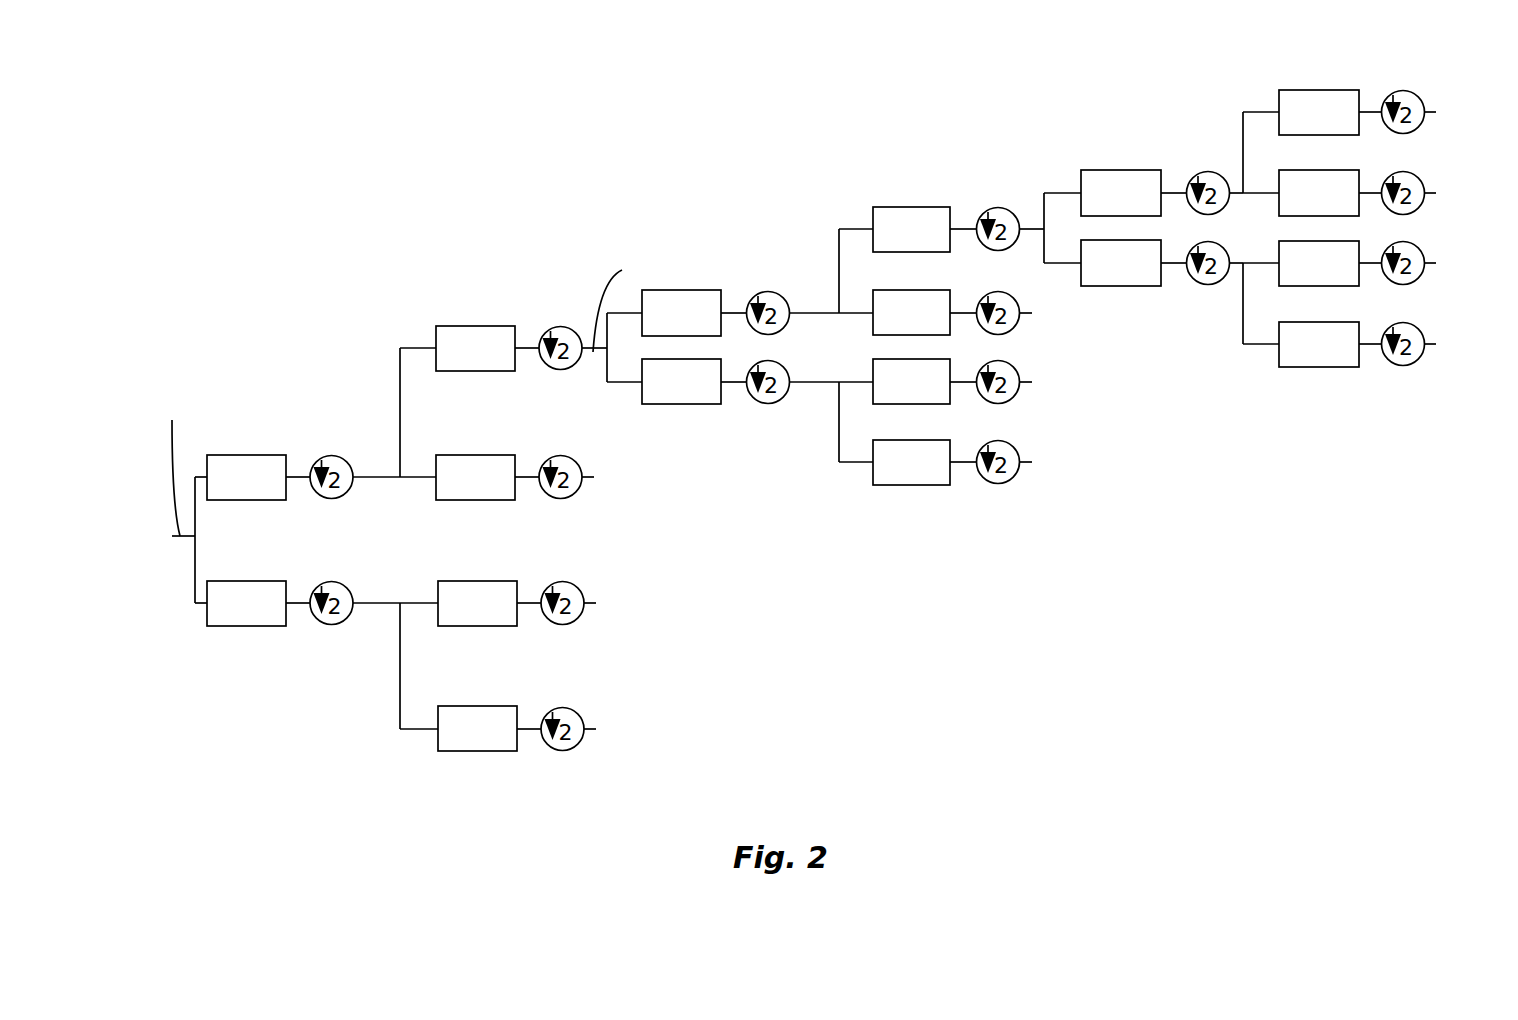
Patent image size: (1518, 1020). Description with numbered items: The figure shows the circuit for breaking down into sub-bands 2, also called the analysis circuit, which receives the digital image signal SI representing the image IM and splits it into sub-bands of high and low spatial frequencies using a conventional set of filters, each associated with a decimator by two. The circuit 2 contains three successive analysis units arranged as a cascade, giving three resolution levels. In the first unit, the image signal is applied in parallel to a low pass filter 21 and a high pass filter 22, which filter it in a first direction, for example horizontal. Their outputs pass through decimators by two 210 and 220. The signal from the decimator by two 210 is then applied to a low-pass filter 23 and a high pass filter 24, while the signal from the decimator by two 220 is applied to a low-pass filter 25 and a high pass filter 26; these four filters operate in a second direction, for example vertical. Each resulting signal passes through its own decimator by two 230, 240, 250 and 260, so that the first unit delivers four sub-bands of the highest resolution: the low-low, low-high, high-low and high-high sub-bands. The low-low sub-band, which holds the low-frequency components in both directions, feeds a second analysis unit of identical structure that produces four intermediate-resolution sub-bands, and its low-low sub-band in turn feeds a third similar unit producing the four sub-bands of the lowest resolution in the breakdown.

The circuit for breaking down into sub-bands 2 is at (820, 420).
The low pass filter 21 is at (250, 455).
The high pass filter 22 is at (250, 581).
The low-pass filter 23 is at (482, 326).
The high pass filter 24 is at (482, 455).
The low-pass filter 25 is at (484, 581).
The high pass filter 26 is at (484, 706).
The decimator by two 210 is at (331, 456).
The decimator by two 220 is at (332, 582).
The decimator by two 230 is at (561, 327).
The decimator by two 240 is at (561, 456).
The decimator by two 250 is at (564, 582).
The decimator by two 260 is at (564, 708).